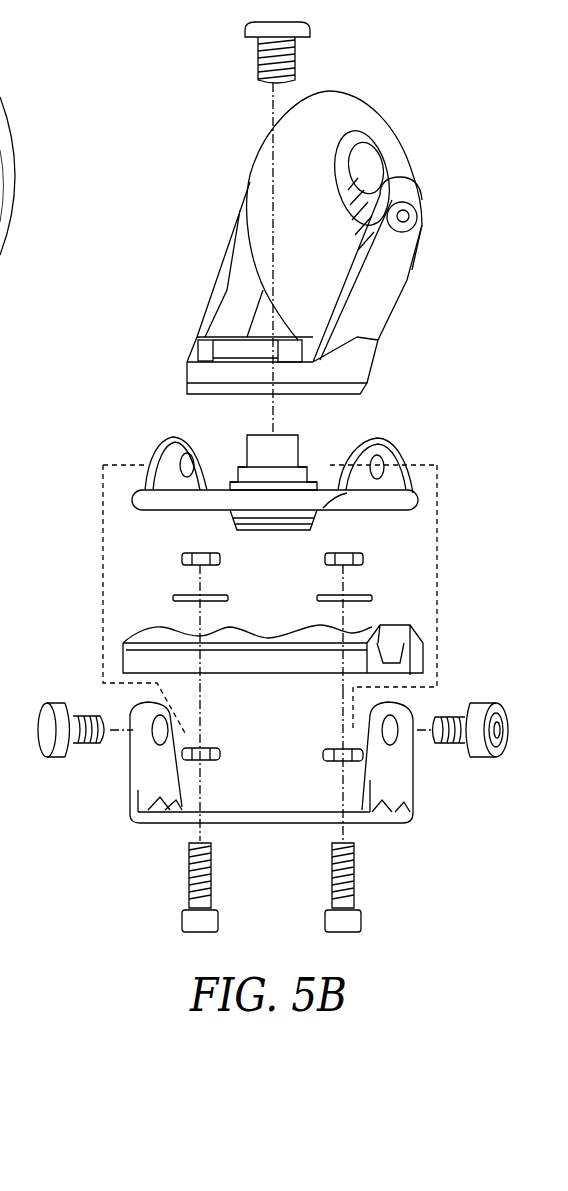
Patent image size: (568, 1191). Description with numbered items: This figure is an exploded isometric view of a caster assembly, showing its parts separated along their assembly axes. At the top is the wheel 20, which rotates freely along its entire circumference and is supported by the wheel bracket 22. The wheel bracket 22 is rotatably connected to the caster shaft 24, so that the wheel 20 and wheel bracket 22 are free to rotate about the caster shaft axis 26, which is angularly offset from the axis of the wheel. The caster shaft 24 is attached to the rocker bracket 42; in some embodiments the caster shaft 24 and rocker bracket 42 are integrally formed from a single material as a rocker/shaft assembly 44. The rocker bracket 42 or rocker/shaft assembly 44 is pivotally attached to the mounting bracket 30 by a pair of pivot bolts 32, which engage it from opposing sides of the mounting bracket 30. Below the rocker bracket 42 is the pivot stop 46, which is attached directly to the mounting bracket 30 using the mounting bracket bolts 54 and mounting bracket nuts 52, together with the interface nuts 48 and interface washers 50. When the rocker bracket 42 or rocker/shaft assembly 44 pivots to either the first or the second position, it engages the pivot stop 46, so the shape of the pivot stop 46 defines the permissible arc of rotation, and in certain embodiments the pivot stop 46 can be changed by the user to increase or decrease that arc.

The wheel 20 is at (353, 110).
The wheel bracket 22 is at (235, 237).
The caster shaft 24 is at (287, 448).
The caster shaft axis 26 is at (260, 62).
The mounting bracket 30 is at (147, 822).
The pivot bolts 32 is at (60, 758).
The rocker bracket 42 is at (177, 435).
The rocker/shaft assembly 44 is at (275, 473).
The pivot stop 46 is at (293, 633).
The interface nuts 48 is at (200, 553).
The interface washers 50 is at (185, 596).
The mounting bracket nuts 52 is at (322, 753).
The mounting bracket bolts 54 is at (325, 919).